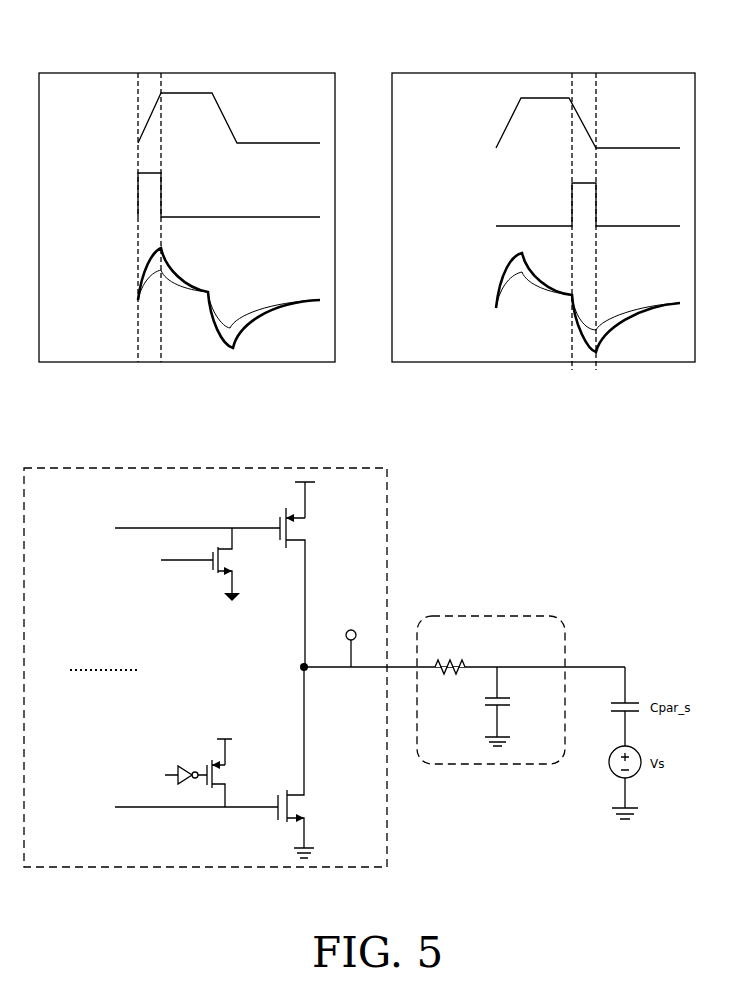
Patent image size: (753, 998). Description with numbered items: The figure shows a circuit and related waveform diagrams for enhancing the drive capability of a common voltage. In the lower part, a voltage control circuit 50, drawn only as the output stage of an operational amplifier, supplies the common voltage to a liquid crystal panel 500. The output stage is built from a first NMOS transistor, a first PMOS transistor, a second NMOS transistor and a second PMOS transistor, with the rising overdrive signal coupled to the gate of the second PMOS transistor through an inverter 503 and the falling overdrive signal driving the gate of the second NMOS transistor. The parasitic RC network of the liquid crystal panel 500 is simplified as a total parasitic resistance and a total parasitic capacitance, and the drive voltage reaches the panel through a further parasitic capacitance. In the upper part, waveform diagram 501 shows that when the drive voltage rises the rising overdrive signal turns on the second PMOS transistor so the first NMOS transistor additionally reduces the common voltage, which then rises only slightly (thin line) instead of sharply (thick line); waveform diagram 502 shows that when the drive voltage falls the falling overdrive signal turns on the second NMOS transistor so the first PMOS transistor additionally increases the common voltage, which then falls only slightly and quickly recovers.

The waveform diagram 501 is at (266, 73).
The waveform diagram 502 is at (622, 73).
The voltage control circuit 50 is at (205, 641).
The liquid crystal panel 500 is at (492, 615).
The inverter 503 is at (186, 766).